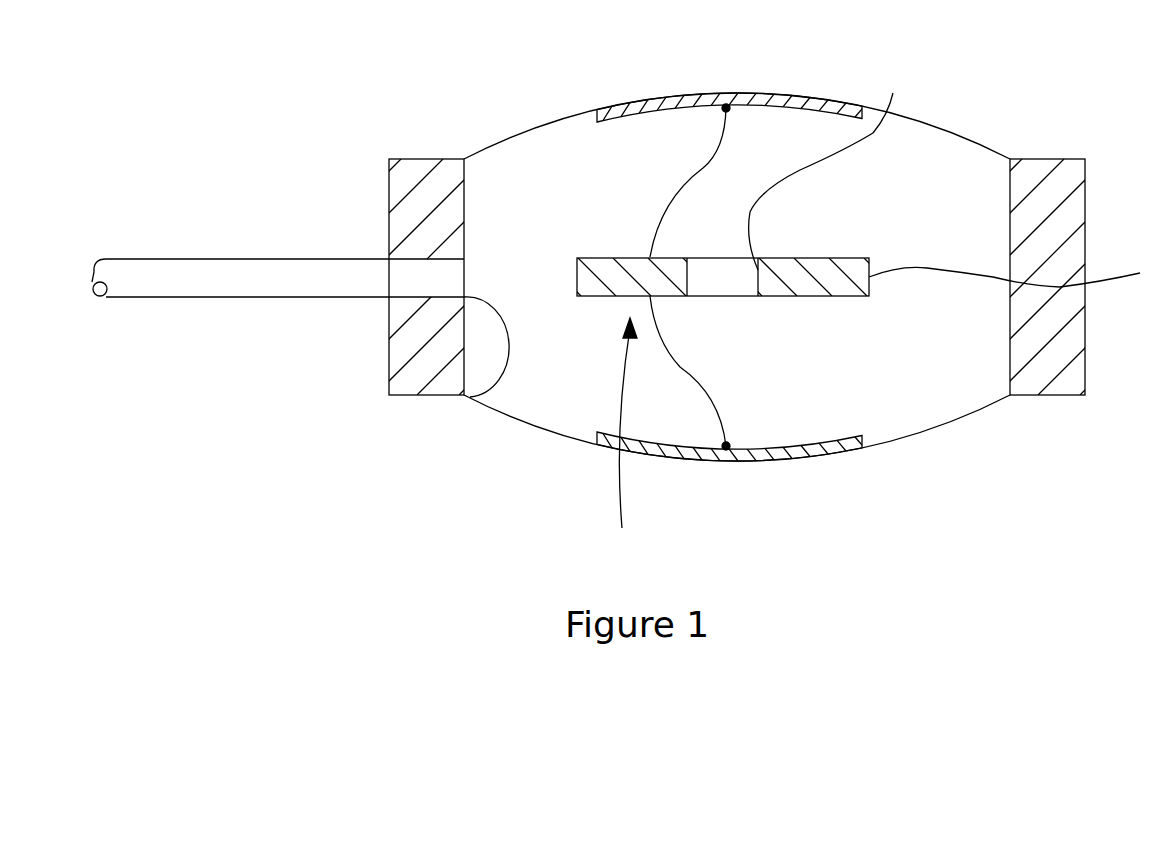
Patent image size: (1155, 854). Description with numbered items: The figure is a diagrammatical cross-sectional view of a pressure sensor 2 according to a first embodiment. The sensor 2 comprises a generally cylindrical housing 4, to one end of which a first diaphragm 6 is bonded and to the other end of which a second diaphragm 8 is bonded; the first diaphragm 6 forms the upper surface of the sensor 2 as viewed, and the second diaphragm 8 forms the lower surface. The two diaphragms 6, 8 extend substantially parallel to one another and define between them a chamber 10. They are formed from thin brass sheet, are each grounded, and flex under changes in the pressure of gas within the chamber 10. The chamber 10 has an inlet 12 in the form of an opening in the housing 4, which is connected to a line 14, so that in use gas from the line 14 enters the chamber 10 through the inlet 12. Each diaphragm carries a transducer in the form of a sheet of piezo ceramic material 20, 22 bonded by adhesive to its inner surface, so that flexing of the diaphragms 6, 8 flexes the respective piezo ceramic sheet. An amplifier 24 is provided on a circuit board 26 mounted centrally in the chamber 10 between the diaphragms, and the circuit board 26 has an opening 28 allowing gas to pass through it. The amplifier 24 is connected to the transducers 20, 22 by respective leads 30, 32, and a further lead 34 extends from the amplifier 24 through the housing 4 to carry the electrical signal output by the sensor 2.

The pressure sensor 2 is at (386, 529).
The housing 4 is at (405, 198).
The first diaphragm 6 is at (527, 130).
The second diaphragm 8 is at (530, 424).
The chamber 10 is at (903, 220).
The inlet 12 is at (477, 397).
The line 14 is at (226, 298).
The piezo ceramic material sheet 20 is at (765, 97).
The piezo ceramic material sheet 22 is at (790, 456).
The amplifier 24 is at (620, 438).
The circuit board 26 is at (837, 277).
The opening 28 is at (829, 165).
The lead 30 is at (703, 168).
The lead 32 is at (717, 397).
The lead 34 is at (1110, 285).